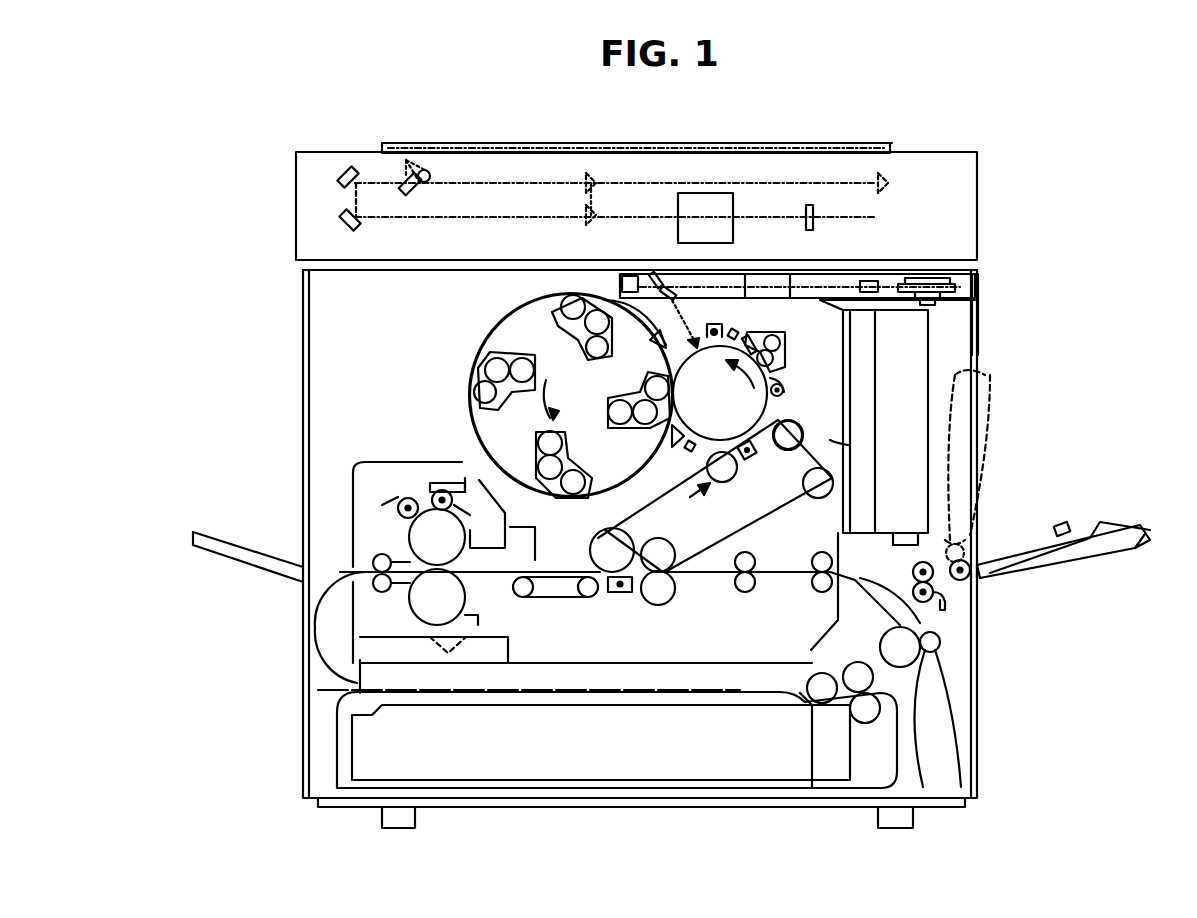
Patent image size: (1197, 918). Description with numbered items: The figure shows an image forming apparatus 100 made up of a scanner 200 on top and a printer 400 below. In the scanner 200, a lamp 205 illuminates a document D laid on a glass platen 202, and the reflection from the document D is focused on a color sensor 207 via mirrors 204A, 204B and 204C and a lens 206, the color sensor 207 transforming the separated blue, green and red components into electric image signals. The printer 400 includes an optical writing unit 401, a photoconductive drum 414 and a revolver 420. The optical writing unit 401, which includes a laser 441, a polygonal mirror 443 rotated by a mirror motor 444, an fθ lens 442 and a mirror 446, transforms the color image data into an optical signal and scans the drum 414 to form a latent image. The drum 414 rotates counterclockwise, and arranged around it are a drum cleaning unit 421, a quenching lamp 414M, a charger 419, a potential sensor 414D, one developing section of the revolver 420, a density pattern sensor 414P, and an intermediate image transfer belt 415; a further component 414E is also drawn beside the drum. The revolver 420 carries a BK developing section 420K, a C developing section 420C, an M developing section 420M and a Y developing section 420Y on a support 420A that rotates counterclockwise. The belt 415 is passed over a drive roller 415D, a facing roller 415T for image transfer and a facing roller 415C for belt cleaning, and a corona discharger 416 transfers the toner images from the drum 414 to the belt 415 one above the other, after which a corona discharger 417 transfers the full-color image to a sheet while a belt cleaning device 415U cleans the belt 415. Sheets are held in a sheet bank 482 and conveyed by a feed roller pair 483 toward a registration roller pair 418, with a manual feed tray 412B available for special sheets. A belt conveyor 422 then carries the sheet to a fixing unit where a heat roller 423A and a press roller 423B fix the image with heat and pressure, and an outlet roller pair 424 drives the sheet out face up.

The image forming apparatus 100 is at (278, 112).
The scanner 200 is at (278, 180).
The glass platen 202 is at (660, 146).
The document D is at (775, 142).
The mirror 204A is at (423, 188).
The mirror 204B is at (350, 165).
The mirror 204C is at (350, 222).
The lamp 205 is at (425, 174).
The lens 206 is at (733, 207).
The color sensor 207 is at (814, 212).
The printer 400 is at (284, 314).
The optical writing unit 401 is at (880, 318).
The photoconductive drum 414 is at (772, 410).
The density pattern sensor 414P is at (722, 389).
The potential sensor 414D is at (613, 311).
The quenching lamp 414M is at (747, 334).
The discharge lamp 414E is at (782, 396).
The intermediate image transfer belt 415 is at (776, 525).
The facing roller for belt cleaning 415C is at (677, 503).
The drive roller 415D is at (845, 444).
The facing roller for image transfer 415T is at (731, 484).
The belt cleaning device 415U is at (548, 552).
The corona discharger 416 is at (758, 464).
The corona discharger 417 is at (646, 594).
The registration roller pair 418 is at (745, 600).
The charger 419 is at (716, 320).
The revolver type developing device 420 is at (428, 374).
The support 420A is at (490, 342).
The BK developing section 420K is at (544, 328).
The Y developing section 420Y is at (480, 416).
The M developing section 420M is at (532, 458).
The C developing section 420C is at (652, 438).
The drum cleaning unit 421 is at (786, 348).
The belt conveyor 422 is at (590, 604).
The heat roller 423A is at (408, 534).
The press roller 423B is at (468, 598).
The outlet roller pair 424 is at (348, 560).
The laser 441 is at (868, 279).
The fθ lens 442 is at (755, 275).
The polygonal mirror 443 is at (980, 278).
The mirror motor 444 is at (970, 316).
The mirror 446 is at (650, 277).
The sheet bank 482 is at (671, 770).
The feed roller pair 483 is at (853, 662).
The manual feed tray 412B is at (1090, 496).